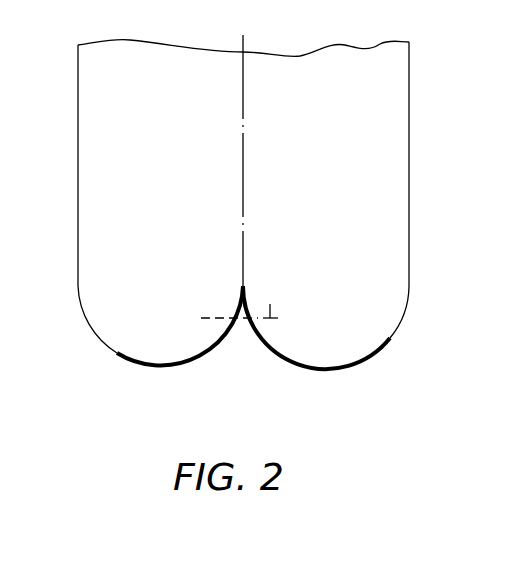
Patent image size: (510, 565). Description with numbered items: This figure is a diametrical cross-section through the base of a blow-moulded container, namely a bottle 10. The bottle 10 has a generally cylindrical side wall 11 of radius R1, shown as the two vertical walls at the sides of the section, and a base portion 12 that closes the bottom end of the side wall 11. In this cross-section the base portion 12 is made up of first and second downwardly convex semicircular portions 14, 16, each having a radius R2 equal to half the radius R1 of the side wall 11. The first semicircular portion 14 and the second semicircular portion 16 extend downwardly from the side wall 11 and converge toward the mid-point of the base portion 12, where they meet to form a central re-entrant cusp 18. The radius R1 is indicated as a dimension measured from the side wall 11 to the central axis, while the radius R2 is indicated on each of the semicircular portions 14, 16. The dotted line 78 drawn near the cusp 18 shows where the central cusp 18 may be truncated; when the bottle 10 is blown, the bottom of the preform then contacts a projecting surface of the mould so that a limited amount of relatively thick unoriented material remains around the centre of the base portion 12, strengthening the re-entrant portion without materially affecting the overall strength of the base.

The bottle 10 is at (78, 61).
The side wall 11 is at (78, 143).
The base portion 12 is at (388, 340).
The first semicircular portion 14 is at (120, 358).
The second semicircular portion 16 is at (289, 359).
The cusp 18 is at (245, 289).
The dotted line 78 is at (272, 302).
The radius of side wall R1 is at (243, 262).
The radius of semicircular portions R2 is at (193, 353).